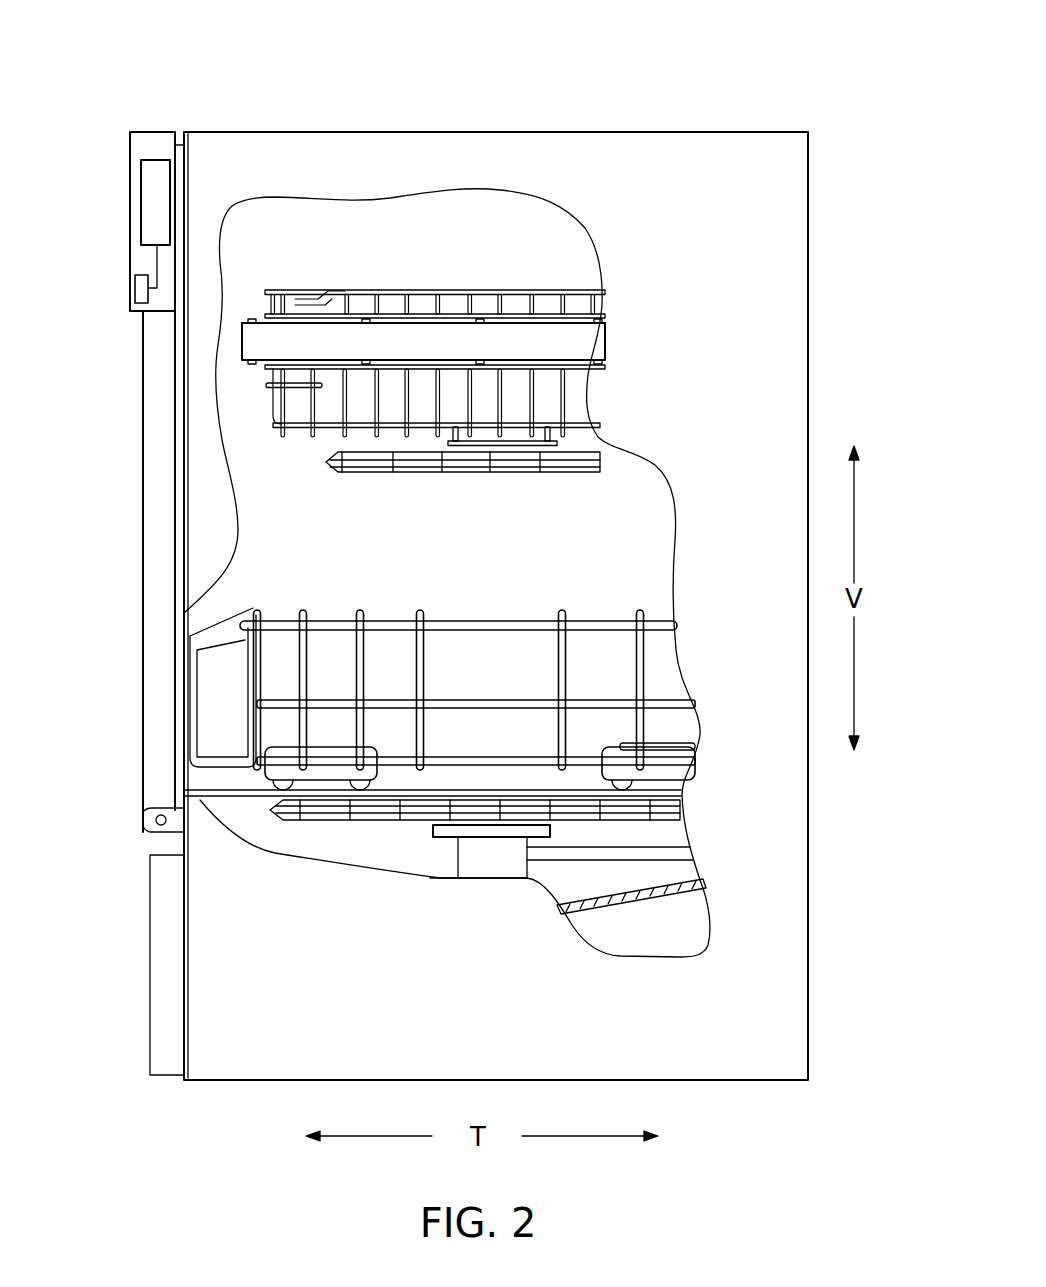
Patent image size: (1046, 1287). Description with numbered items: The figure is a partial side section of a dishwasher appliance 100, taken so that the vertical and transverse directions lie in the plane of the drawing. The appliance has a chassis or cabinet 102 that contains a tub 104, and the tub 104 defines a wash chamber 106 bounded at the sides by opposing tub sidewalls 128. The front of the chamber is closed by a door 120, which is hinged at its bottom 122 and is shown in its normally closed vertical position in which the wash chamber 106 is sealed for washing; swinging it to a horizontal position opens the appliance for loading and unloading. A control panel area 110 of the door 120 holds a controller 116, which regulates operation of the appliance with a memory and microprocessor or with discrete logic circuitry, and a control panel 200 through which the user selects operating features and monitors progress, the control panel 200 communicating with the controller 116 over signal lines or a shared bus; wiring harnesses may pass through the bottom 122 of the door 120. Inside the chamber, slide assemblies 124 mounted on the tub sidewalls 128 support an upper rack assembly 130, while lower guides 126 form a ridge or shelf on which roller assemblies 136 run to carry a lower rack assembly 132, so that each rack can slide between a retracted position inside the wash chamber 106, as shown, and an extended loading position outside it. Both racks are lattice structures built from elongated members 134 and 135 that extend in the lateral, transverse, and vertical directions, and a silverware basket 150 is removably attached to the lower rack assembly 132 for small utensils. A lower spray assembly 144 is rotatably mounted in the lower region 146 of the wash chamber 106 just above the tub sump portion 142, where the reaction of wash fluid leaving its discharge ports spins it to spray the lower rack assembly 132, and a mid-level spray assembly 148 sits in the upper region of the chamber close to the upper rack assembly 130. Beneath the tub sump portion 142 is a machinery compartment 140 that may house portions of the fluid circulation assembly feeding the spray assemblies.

The dishwasher appliance 100 is at (693, 90).
The cabinet 102 is at (788, 253).
The tub 104 is at (306, 563).
The wash chamber 106 is at (272, 538).
The control panel area 110 is at (118, 203).
The controller 116 is at (150, 179).
The door 120 is at (160, 476).
The bottom of door 122 is at (143, 833).
The slide assemblies 124 is at (462, 340).
The lower guides 126 is at (217, 797).
The tub sidewalls 128 is at (328, 232).
The upper rack assembly 130 is at (544, 280).
The lower rack assembly 132 is at (456, 612).
The elongated members 134 is at (300, 440).
The elongated members 135 is at (500, 318).
The roller assemblies 136 is at (660, 773).
The machinery compartment 140 is at (664, 933).
The tub sump portion 142 is at (680, 888).
The lower spray assembly 144 is at (360, 823).
The lower region of wash chamber 146 is at (585, 777).
The mid-level spray assembly 148 is at (471, 492).
The silverware basket 150 is at (213, 700).
The control panel 200 is at (142, 290).